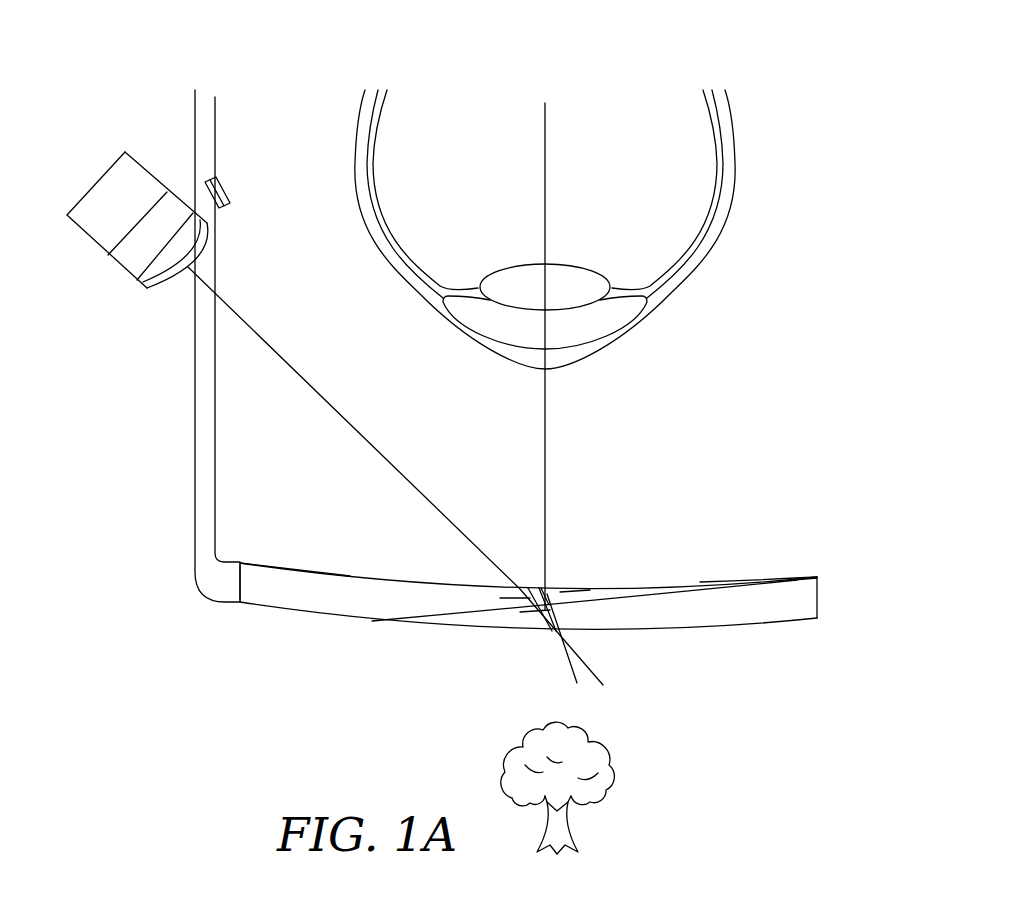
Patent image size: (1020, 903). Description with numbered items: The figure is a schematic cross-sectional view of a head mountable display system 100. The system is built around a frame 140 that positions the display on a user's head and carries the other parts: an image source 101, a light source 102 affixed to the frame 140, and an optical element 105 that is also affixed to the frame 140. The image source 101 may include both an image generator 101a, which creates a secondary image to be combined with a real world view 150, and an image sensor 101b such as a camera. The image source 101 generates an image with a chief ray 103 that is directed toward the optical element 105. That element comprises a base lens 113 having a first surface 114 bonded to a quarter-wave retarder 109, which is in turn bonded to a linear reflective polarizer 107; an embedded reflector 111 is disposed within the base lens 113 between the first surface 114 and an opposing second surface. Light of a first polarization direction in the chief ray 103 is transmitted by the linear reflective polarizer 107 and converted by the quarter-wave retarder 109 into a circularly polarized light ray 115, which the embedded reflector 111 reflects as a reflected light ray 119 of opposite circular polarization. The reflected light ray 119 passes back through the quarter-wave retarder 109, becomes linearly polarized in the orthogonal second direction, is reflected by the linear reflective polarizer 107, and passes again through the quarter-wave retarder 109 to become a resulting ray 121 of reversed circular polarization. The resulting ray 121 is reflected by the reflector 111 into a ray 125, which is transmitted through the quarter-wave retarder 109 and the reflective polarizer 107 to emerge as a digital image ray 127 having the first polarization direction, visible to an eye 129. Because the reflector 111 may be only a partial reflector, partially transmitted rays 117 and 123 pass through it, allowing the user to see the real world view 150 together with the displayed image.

The head mountable display system 100 is at (186, 48).
The image source 101 is at (98, 166).
The image generator 101a is at (85, 227).
The image sensor 101b is at (130, 262).
The light source 102 is at (230, 185).
The chief ray 103 is at (293, 372).
The optical element 105 is at (281, 652).
The linear reflective polarizer 107 is at (780, 580).
The quarter-wave retarder 109 is at (793, 580).
The embedded reflector 111 is at (630, 597).
The base lens 113 is at (253, 582).
The first surface 114 is at (267, 564).
The circularly polarized light ray 115 is at (525, 595).
The partially transmitted ray 117 is at (538, 612).
The reflected light ray 119 is at (532, 598).
The resulting ray 121 is at (548, 596).
The partially transmitted ray 123 is at (565, 665).
The ray 125 is at (580, 592).
The digital image ray 127 is at (545, 412).
The eye 129 is at (336, 111).
The frame 140 is at (195, 113).
The real world view 150 is at (599, 817).